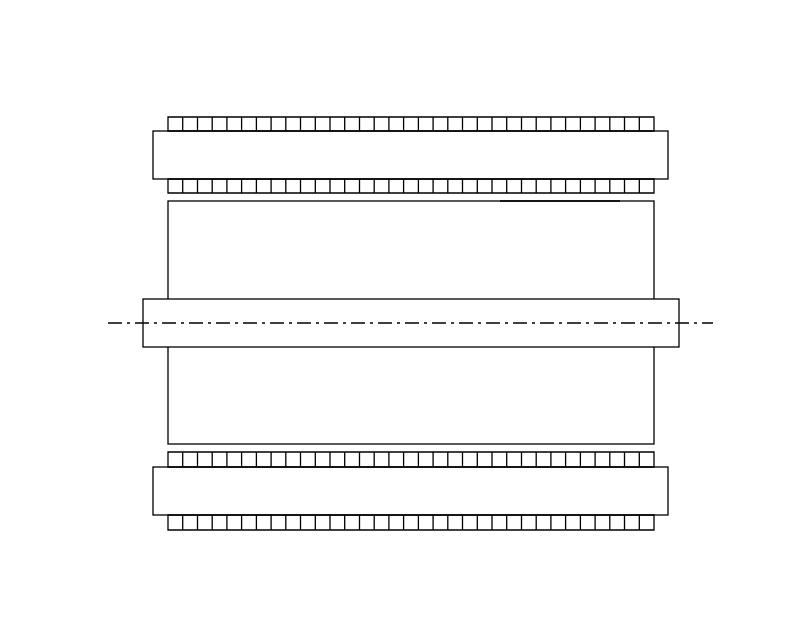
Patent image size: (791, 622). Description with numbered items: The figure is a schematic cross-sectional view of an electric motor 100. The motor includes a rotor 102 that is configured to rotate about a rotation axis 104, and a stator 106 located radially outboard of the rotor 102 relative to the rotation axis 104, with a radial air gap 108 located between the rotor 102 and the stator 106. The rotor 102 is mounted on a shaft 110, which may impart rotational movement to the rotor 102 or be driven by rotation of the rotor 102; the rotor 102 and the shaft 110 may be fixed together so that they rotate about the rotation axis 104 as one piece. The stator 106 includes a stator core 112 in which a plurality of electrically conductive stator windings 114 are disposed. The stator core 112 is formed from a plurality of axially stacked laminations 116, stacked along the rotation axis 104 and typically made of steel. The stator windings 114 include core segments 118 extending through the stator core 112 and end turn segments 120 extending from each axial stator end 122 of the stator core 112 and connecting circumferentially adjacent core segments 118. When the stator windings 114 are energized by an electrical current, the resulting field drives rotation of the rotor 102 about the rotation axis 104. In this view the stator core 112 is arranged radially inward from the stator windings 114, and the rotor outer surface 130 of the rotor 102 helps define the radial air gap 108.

The electric motor 100 is at (97, 49).
The rotor 102 is at (433, 264).
The rotation axis 104 is at (697, 323).
The stator 106 is at (635, 69).
The radial air gap 108 is at (165, 198).
The shaft 110 is at (150, 341).
The stator core 112 is at (440, 118).
The stator windings 114 is at (533, 155).
The laminations 116 is at (350, 123).
The core segments 118 is at (375, 138).
The end turn segments 120 is at (162, 162).
The axial stator end 122 is at (165, 125).
The rotor outer surface 130 is at (555, 203).